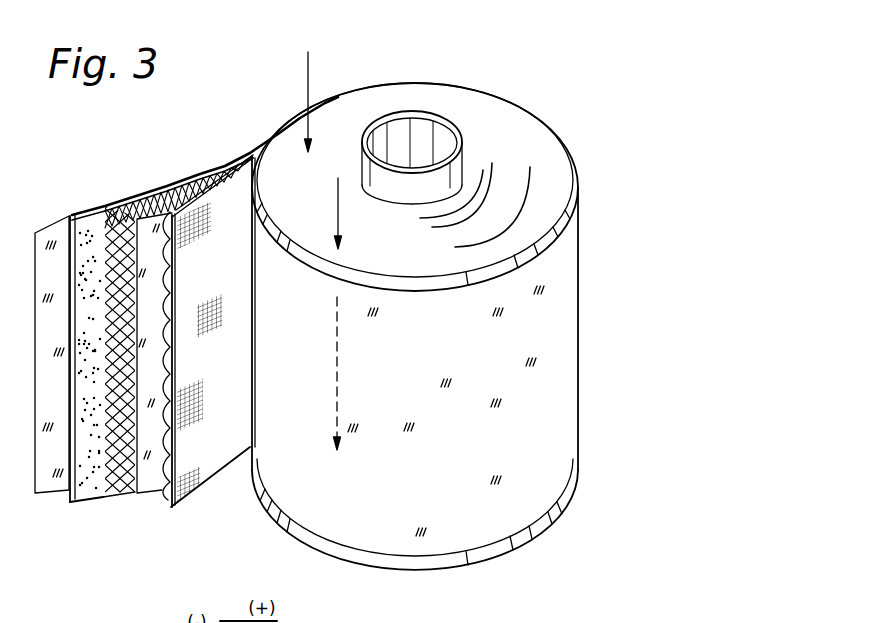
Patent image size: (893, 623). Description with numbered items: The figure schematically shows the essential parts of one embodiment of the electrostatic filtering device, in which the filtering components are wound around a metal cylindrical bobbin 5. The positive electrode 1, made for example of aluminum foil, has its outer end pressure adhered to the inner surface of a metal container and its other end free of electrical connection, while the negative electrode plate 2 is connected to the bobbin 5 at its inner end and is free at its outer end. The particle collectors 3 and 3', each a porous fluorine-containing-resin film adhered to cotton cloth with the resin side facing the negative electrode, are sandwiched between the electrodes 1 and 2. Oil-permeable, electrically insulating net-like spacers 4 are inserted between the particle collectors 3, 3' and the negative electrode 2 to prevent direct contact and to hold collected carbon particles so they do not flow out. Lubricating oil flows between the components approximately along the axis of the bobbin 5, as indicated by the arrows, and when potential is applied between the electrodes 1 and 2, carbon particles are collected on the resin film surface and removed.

The positive electrode 1 is at (57, 230).
The negative electrode plate 2 is at (147, 489).
The particle collector 3 is at (249, 418).
The particle collector 3' is at (213, 359).
The spacer 4 is at (173, 240).
The metal cylindrical bobbin 5 is at (459, 137).